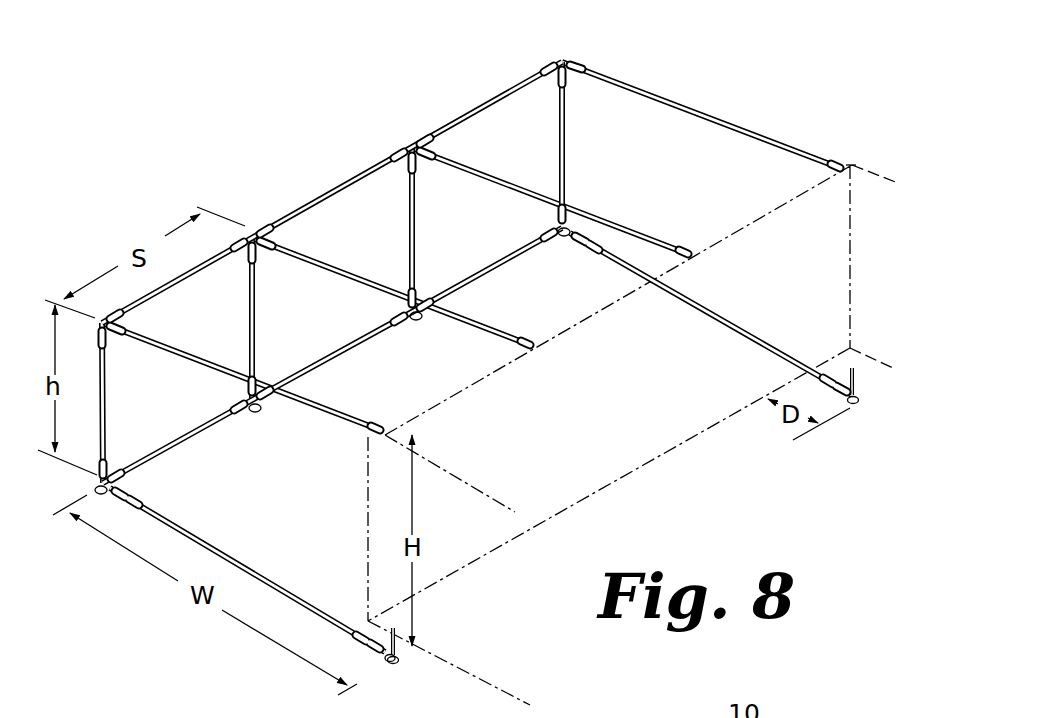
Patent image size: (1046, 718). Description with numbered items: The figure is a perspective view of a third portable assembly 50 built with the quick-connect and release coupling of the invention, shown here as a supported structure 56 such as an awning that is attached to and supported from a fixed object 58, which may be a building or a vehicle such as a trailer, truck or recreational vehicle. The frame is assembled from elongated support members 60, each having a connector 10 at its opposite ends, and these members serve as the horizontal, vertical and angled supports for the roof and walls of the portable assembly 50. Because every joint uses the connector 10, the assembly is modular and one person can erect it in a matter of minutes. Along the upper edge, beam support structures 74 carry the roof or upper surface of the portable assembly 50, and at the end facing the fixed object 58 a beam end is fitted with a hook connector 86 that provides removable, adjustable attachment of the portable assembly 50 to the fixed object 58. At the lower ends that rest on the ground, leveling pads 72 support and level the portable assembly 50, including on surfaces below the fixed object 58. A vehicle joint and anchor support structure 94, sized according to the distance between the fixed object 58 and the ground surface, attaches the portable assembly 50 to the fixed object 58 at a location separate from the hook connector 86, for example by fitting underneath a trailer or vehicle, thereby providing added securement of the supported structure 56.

The connector 10 is at (405, 165).
The portable assembly 50 is at (270, 190).
The supported structure 56 is at (327, 190).
The fixed object 58 is at (720, 237).
The elongated support member 60 is at (200, 272).
The leveling pad 72 is at (256, 412).
The beam support structure 74 is at (499, 182).
The hook connector 86 is at (381, 427).
The vehicle joint and anchor support structure 94 is at (862, 378).